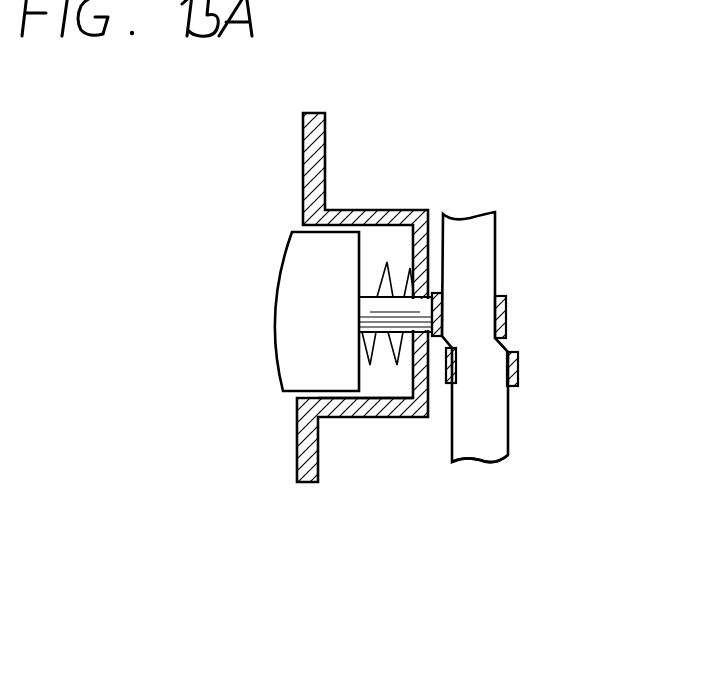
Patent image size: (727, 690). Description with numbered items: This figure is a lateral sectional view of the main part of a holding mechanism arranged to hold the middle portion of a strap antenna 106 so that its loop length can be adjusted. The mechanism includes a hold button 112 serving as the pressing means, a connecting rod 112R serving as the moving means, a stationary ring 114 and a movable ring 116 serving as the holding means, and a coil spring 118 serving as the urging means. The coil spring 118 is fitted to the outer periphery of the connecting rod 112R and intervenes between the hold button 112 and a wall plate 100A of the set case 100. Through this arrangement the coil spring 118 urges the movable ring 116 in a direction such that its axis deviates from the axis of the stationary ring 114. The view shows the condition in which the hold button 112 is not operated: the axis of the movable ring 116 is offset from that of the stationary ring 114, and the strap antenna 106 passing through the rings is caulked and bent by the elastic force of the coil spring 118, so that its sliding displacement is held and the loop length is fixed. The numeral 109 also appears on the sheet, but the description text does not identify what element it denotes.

The set case 100 is at (303, 131).
The wall plate 100A is at (417, 372).
The hold button 112 is at (290, 330).
The connecting rod 112R is at (442, 298).
The coil spring 118 is at (398, 258).
The strap antenna 106 is at (494, 243).
The movable ring 116 is at (506, 320).
The stationary ring 114 is at (518, 367).
The lower plate portion 109 is at (492, 526).